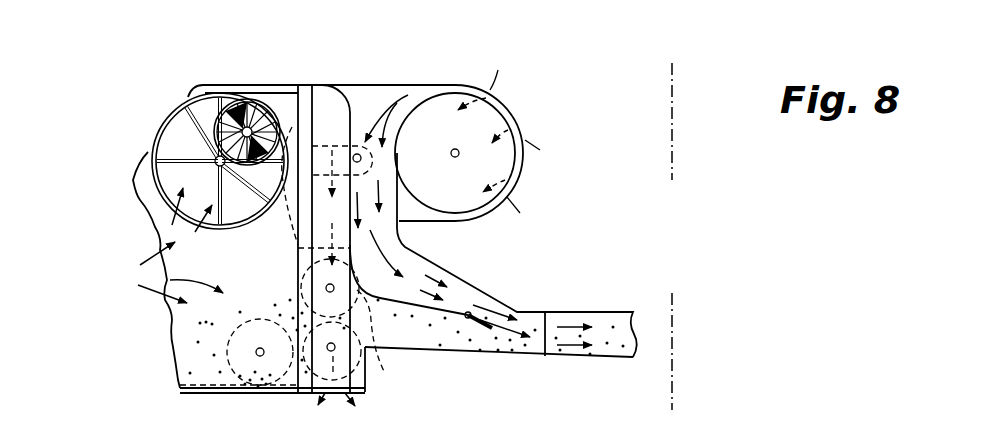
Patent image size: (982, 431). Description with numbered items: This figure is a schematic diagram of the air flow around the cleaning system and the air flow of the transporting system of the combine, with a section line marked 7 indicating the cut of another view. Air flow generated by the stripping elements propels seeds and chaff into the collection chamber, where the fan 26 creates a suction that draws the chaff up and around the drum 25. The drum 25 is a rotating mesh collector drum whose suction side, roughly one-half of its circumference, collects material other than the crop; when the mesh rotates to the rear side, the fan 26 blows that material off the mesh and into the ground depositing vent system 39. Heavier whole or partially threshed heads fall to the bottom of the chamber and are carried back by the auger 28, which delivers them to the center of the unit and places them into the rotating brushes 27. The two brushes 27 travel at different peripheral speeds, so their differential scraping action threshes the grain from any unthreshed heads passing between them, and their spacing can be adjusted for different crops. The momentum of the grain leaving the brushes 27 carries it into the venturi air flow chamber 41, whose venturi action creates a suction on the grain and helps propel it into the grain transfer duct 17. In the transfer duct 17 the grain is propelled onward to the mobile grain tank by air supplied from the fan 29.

The drum 25 is at (167, 173).
The fan 26 is at (256, 108).
The ground depositing vent system 39 is at (329, 108).
The fan 29 is at (510, 103).
The grain transfer duct 17 is at (590, 312).
The venturi air flow chamber 41 is at (493, 357).
The auger 28 is at (260, 318).
The rotating brushes 27 is at (385, 373).
The section line 7- 7 is at (636, 63).